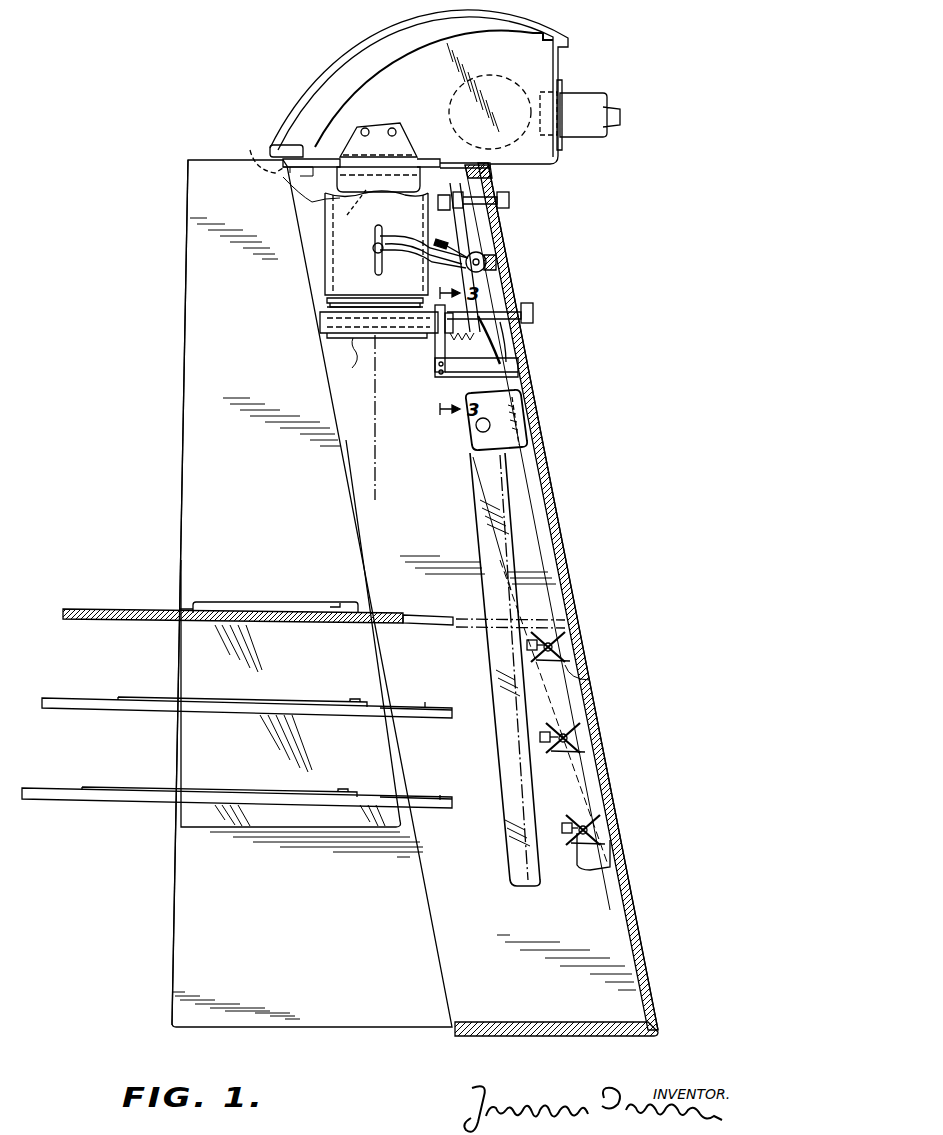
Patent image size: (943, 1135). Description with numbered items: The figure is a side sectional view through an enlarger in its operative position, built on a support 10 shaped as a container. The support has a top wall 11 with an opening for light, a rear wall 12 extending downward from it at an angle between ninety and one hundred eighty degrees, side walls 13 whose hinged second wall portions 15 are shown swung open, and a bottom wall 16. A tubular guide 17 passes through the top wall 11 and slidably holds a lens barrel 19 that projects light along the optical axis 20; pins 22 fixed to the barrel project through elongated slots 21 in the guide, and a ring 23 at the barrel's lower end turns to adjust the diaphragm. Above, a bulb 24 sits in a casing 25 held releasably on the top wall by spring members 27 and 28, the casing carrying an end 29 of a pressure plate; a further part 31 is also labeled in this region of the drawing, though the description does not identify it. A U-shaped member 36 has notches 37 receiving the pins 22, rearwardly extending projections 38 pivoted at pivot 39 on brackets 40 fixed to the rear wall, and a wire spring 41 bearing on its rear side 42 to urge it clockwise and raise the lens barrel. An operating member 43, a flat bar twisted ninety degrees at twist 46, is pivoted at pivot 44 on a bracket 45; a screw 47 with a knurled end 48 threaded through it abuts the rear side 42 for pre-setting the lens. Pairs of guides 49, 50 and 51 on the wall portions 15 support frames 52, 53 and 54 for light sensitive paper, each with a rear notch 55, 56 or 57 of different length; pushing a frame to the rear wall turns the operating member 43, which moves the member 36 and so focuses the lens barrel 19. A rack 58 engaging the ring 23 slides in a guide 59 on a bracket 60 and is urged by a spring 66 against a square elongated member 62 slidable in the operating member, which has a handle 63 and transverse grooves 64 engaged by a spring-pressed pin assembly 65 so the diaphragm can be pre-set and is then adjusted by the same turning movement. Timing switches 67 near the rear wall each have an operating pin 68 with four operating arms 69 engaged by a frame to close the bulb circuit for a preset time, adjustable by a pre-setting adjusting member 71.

The support 10 is at (560, 546).
The top wall 11 is at (315, 200).
The rear wall 12 is at (558, 480).
The side walls 13 is at (186, 334).
The second wall portion 15 is at (350, 593).
The bottom wall 16 is at (530, 1037).
The tubular guide 17 is at (322, 228).
The lens barrel 19 is at (322, 305).
The optical axis 20 is at (372, 485).
The elongated slots 21 is at (378, 230).
The pins 22 is at (372, 248).
The ring 23 is at (353, 338).
The bulb 24 is at (513, 90).
The casing 25 is at (328, 78).
The spring member 27 is at (280, 165).
The spring member 28 is at (466, 166).
The end of pressure plate 29 is at (384, 130).
The cover 31 is at (354, 210).
The U-shaped member 36 is at (412, 260).
The notches 37 is at (376, 262).
The rearwardly extending projections 38 is at (482, 250).
The pivot 39 is at (490, 260).
The brackets 40 is at (500, 265).
The wire spring 41 is at (505, 286).
The rear side 42 is at (490, 226).
The operating member 43 is at (492, 555).
The pivot 44 is at (477, 432).
The bracket 45 is at (530, 442).
The twist 46 is at (490, 357).
The screw 47 is at (490, 190).
The knurled end 48 is at (512, 200).
The guides 49 is at (273, 601).
The guides 50 is at (312, 673).
The guides 51 is at (200, 817).
The frame 52 is at (145, 607).
The frame 53 is at (85, 698).
The frame 54 is at (48, 790).
The notch 55 is at (432, 616).
The notch 56 is at (425, 706).
The notch 57 is at (440, 798).
The rack 58 is at (318, 322).
The guide 59 is at (433, 338).
The bracket 60 is at (440, 376).
The elongated member 62 is at (538, 308).
The handle 63 is at (536, 315).
The transverse grooves 64 is at (503, 332).
The spring-pressed pin assembly 65 is at (520, 372).
The spring 66 is at (433, 356).
The timing switches 67 is at (568, 652).
The operating pin 68 is at (553, 647).
The operating arms 69 is at (590, 680).
The pre-setting adjusting member 71 is at (525, 645).